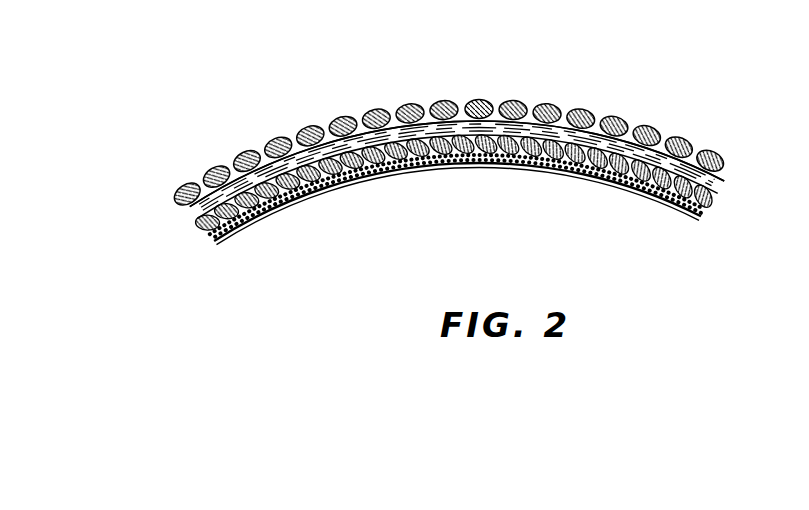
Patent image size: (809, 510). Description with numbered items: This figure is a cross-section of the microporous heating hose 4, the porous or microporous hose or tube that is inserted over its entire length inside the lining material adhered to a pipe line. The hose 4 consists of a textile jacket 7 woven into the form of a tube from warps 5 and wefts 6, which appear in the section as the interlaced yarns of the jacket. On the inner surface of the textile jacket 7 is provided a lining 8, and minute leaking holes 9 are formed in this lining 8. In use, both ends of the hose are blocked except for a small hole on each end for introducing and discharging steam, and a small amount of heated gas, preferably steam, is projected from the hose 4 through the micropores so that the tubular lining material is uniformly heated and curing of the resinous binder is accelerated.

The porous or microporous hose 4 is at (571, 87).
The warps 5 is at (612, 118).
The wefts 6 is at (672, 142).
The textile jacket 7 is at (730, 163).
The lining 8 is at (626, 178).
The minute leaking holes 9 is at (524, 156).